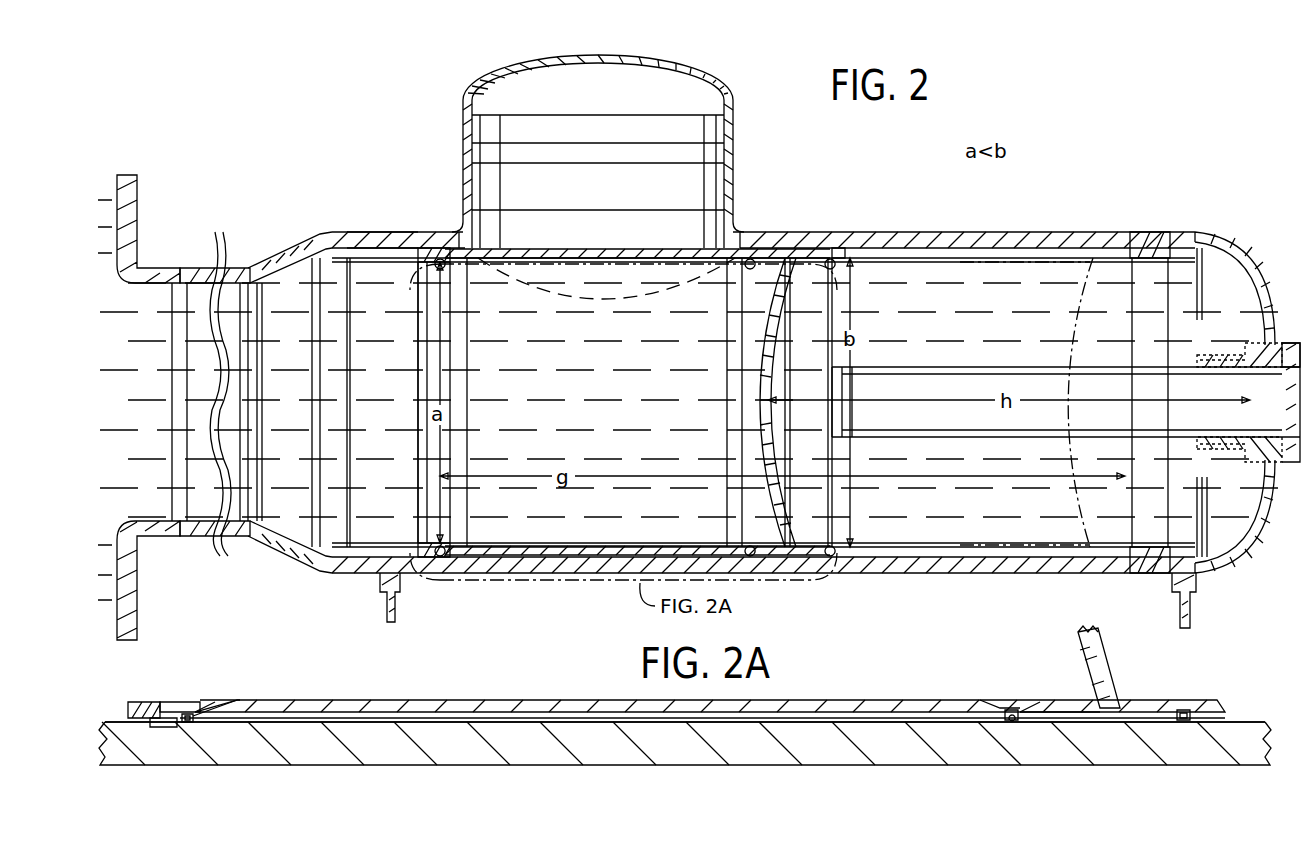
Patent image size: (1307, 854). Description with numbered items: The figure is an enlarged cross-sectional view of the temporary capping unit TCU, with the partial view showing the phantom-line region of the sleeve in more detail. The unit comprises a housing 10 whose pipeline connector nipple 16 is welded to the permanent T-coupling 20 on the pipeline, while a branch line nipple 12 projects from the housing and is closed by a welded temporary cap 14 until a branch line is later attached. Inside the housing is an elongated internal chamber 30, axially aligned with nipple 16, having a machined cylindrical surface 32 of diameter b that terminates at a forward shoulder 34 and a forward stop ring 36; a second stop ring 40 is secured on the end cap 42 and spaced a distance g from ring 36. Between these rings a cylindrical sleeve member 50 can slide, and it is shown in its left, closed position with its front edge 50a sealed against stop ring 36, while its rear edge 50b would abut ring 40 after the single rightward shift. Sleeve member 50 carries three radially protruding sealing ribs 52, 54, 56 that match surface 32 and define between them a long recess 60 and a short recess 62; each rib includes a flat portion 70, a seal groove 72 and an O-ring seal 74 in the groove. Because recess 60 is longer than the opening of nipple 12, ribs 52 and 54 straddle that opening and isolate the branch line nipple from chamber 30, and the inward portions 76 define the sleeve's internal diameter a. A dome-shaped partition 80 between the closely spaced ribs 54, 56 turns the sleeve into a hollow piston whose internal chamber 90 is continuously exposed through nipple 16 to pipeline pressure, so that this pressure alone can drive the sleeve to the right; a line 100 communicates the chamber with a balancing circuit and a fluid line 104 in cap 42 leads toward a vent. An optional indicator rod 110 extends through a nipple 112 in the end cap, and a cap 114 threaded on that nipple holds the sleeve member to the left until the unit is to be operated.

In FIG. 2, the housing 10 is at (936, 234).
In FIG. 2, the branch line nipple 12 is at (736, 190).
In FIG. 2, the temporary cap 14 is at (676, 62).
In FIG. 2, the pipeline connector nipple 16 is at (207, 265).
In FIG. 2, the T-coupling 20 is at (160, 542).
In FIG. 2, the internal chamber 30 is at (363, 307).
In FIG. 2, the machined cylindrical surface 32 is at (990, 262).
In FIG. 2A, the machined cylindrical surface 32 is at (797, 718).
In FIG. 2, the forward shoulder 34 is at (375, 258).
In FIG. 2A, the forward shoulder 34 is at (125, 718).
In FIG. 2, the forward stop ring 36 is at (420, 350).
In FIG. 2A, the forward stop ring 36 is at (150, 705).
In FIG. 2, the stop ring 40 is at (1180, 258).
In FIG. 2, the end cap 42 is at (1240, 262).
In FIG. 2, the sleeve member 50 is at (588, 260).
In FIG. 2A, the sleeve member 50 is at (430, 696).
In FIG. 2, the front edge 50a is at (436, 386).
In FIG. 2, the rear edge 50b is at (832, 282).
In FIG. 2, the sealing rib 52 is at (440, 250).
In FIG. 2A, the sealing rib 52 is at (205, 710).
In FIG. 2, the sealing rib 54 is at (760, 236).
In FIG. 2A, the sealing rib 54 is at (1010, 710).
In FIG. 2, the sealing rib 56 is at (830, 250).
In FIG. 2A, the sealing rib 56 is at (1190, 710).
In FIG. 2, the recess 60 is at (560, 553).
In FIG. 2A, the recess 60 is at (505, 718).
In FIG. 2, the recess 62 is at (807, 252).
In FIG. 2A, the recess 62 is at (1072, 705).
In FIG. 2A, the flat portion 70 is at (170, 735).
In FIG. 2A, the seal groove 72 is at (225, 720).
In FIG. 2A, the O-ring seal 74 is at (190, 725).
In FIG. 2, the inward portion 76 is at (438, 543).
In FIG. 2A, the inward portion 76 is at (182, 712).
In FIG. 2, the dome-shaped partition 80 is at (778, 342).
In FIG. 2, the internal chamber 90 is at (532, 283).
In FIG. 2, the line 100 is at (385, 607).
In FIG. 2, the fluid line 104 is at (1196, 605).
In FIG. 2, the indicator rod 110 is at (970, 380).
In FIG. 2, the nipple 112 is at (1223, 360).
In FIG. 2, the cap 114 is at (1290, 357).
In FIG. 2, the temporary capping unit TCU is at (1058, 222).